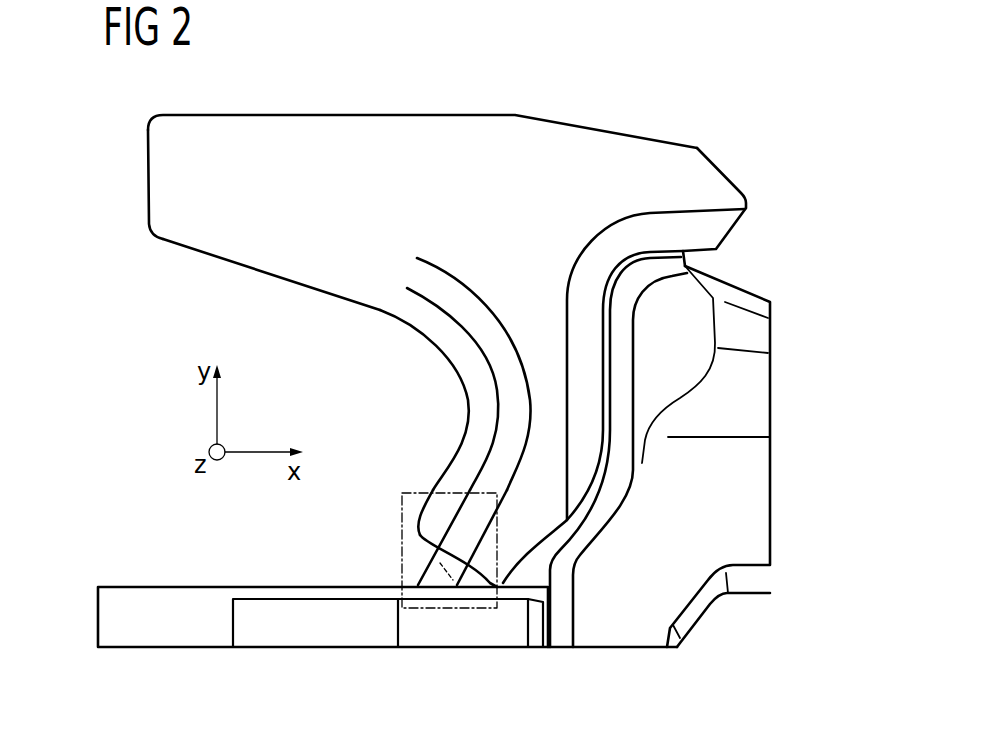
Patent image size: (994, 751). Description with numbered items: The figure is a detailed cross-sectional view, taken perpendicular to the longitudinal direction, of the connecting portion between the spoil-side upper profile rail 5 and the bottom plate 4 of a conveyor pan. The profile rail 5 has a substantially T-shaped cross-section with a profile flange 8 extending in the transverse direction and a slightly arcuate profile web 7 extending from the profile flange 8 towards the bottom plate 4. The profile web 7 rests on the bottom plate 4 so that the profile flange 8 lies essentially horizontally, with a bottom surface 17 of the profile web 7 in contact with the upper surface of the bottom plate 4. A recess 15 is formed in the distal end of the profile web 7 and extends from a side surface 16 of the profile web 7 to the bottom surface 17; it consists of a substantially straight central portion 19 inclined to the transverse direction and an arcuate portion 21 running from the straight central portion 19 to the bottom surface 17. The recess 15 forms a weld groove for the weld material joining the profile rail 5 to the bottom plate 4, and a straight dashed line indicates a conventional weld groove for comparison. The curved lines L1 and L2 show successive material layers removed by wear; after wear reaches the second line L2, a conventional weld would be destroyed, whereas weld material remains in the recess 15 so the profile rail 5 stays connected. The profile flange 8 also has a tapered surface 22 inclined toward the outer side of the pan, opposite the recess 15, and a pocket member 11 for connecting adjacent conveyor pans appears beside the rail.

The bottom plate 4 is at (183, 587).
The profile rail 5 is at (176, 281).
The profile web 7 is at (421, 393).
The profile flange 8 is at (407, 115).
The pocket member 11 is at (703, 620).
The recess 15 is at (417, 557).
The side surface 16 is at (442, 473).
The bottom surface 17 is at (492, 590).
The straight central portion 19 is at (437, 550).
The arcuate portion 21 is at (473, 563).
The tapered surface 22 is at (628, 135).
The first wear line L1 is at (408, 287).
The second wear line L2 is at (463, 278).